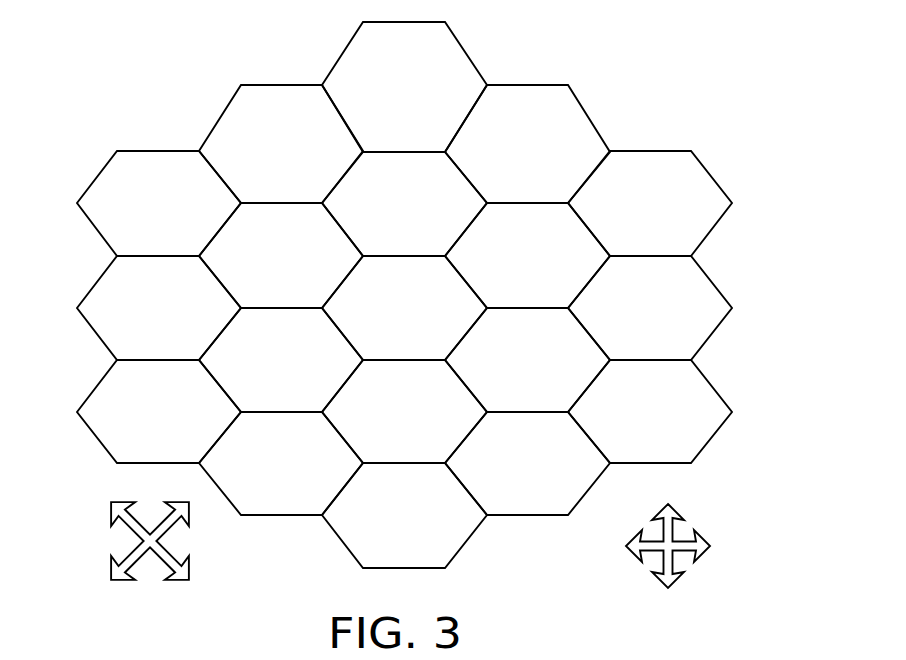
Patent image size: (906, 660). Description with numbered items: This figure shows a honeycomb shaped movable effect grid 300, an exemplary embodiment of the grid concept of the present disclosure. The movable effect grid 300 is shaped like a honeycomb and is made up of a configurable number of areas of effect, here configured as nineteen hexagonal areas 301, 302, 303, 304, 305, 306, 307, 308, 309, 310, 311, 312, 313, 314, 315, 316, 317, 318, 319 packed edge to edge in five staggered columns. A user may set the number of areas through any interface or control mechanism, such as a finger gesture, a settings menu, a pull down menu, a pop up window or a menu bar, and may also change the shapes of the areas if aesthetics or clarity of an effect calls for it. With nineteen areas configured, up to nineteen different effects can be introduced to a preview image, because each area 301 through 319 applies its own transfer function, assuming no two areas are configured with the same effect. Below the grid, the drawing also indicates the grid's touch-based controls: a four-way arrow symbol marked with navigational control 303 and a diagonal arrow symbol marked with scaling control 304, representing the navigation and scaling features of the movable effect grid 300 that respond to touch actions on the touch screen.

The movable effect grid 300 is at (730, 68).
The area 301 is at (404, 87).
The area 302 is at (281, 144).
The navigational control 303 is at (753, 515).
The scaling control 304 is at (112, 540).
The area 305 is at (404, 204).
The area 306 is at (650, 203).
The area 307 is at (281, 255).
The area 308 is at (527, 255).
The area 309 is at (159, 308).
The area 310 is at (404, 308).
The area 311 is at (650, 308).
The area 312 is at (281, 360).
The area 313 is at (527, 360).
The area 314 is at (159, 411).
The area 315 is at (404, 411).
The area 316 is at (650, 411).
The area 317 is at (281, 463).
The area 318 is at (527, 463).
The area 319 is at (404, 515).